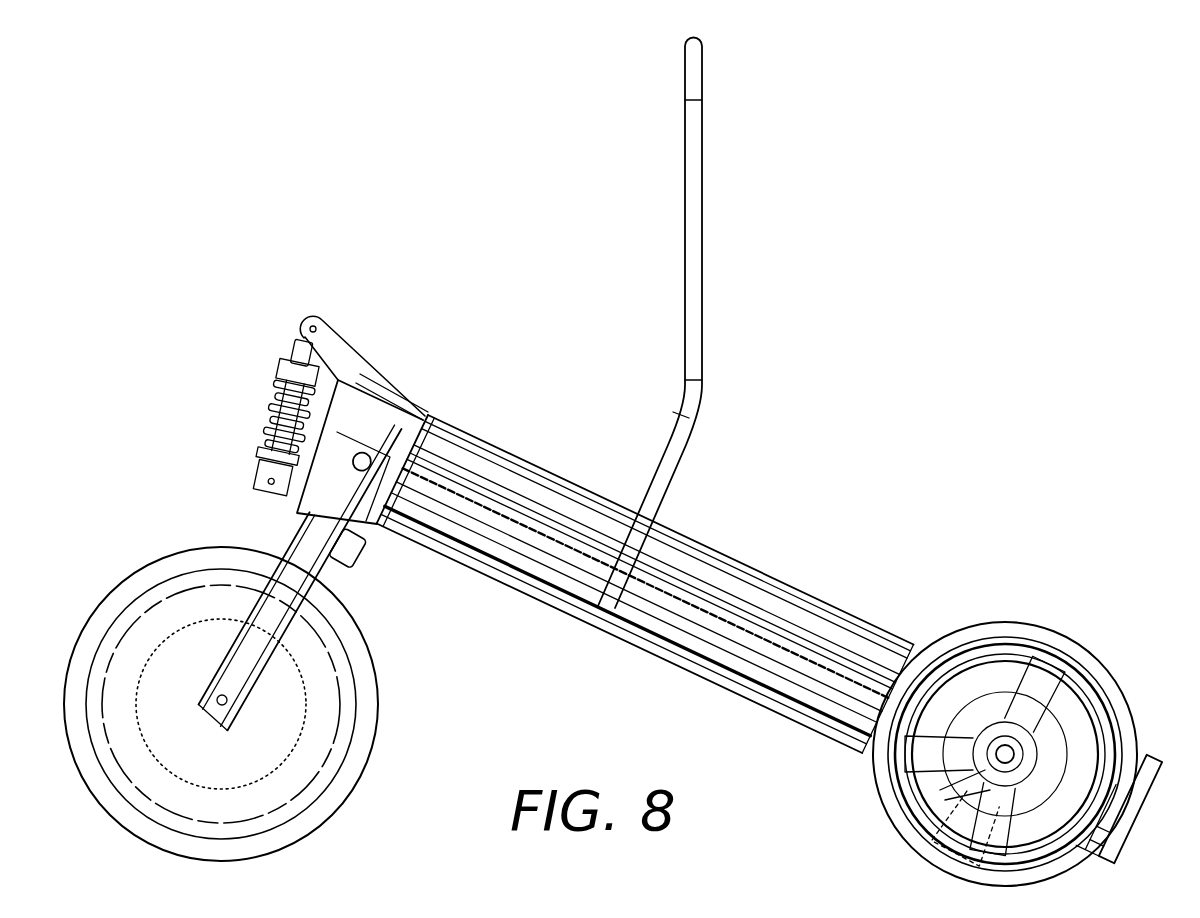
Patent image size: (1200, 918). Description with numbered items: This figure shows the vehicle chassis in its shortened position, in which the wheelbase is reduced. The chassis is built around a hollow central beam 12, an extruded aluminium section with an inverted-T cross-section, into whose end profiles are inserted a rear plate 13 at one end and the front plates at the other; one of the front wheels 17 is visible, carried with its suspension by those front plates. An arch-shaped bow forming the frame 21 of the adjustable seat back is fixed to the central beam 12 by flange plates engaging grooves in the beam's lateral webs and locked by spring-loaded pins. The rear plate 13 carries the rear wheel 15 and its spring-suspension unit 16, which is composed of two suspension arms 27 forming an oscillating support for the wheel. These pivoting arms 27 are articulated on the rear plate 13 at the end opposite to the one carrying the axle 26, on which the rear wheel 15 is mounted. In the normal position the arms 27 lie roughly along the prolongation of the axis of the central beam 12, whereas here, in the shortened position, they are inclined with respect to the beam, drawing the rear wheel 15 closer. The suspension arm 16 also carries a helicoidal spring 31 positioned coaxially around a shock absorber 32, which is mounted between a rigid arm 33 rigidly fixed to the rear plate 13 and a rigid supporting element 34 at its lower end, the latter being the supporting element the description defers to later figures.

The hollow central beam 12 is at (777, 581).
The rear plate 13 is at (418, 420).
The rear wheel 15 is at (360, 738).
The spring-suspension unit 16 is at (270, 347).
The front wheel 17 is at (1100, 670).
The frame 21 is at (697, 218).
The axle 26 is at (226, 710).
The suspension arm 27 is at (300, 577).
The helicoidal spring 31 is at (270, 406).
The shock absorber 32 is at (270, 437).
The rigid arm 33 is at (333, 357).
The lower mounting bracket 34 is at (298, 490).